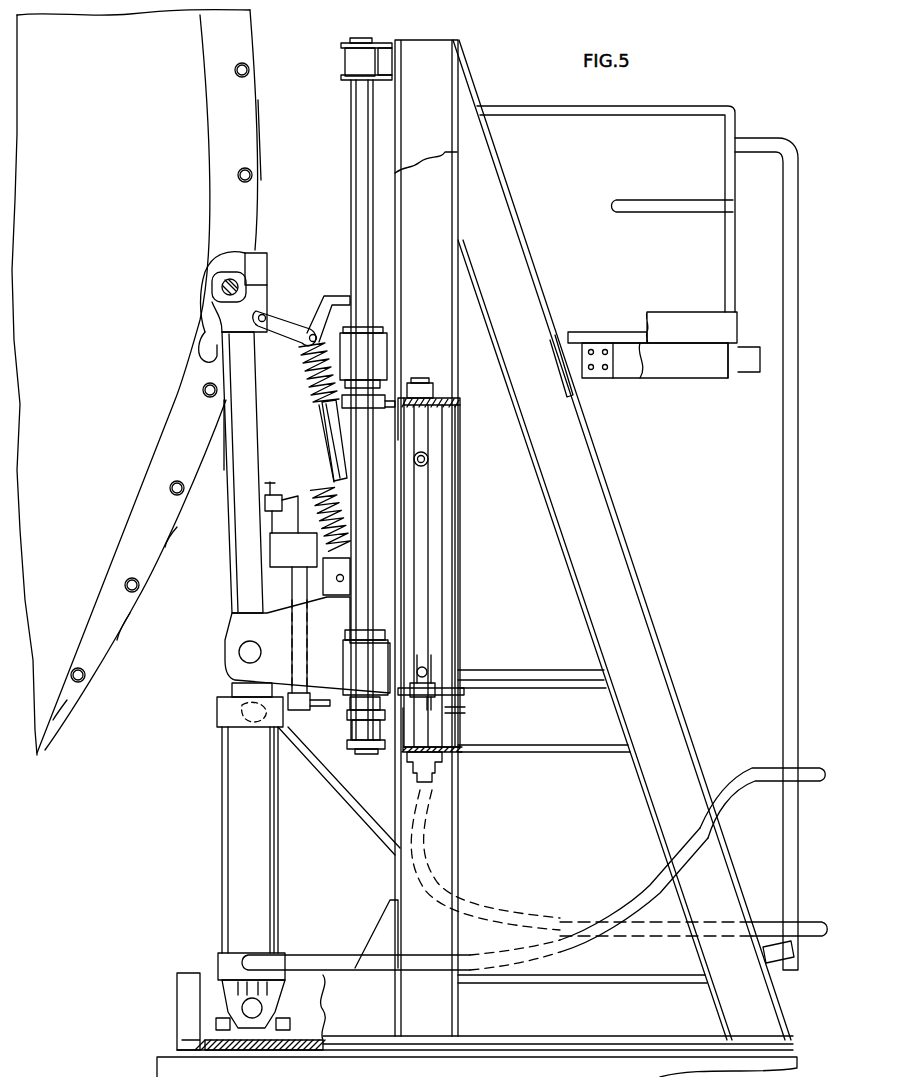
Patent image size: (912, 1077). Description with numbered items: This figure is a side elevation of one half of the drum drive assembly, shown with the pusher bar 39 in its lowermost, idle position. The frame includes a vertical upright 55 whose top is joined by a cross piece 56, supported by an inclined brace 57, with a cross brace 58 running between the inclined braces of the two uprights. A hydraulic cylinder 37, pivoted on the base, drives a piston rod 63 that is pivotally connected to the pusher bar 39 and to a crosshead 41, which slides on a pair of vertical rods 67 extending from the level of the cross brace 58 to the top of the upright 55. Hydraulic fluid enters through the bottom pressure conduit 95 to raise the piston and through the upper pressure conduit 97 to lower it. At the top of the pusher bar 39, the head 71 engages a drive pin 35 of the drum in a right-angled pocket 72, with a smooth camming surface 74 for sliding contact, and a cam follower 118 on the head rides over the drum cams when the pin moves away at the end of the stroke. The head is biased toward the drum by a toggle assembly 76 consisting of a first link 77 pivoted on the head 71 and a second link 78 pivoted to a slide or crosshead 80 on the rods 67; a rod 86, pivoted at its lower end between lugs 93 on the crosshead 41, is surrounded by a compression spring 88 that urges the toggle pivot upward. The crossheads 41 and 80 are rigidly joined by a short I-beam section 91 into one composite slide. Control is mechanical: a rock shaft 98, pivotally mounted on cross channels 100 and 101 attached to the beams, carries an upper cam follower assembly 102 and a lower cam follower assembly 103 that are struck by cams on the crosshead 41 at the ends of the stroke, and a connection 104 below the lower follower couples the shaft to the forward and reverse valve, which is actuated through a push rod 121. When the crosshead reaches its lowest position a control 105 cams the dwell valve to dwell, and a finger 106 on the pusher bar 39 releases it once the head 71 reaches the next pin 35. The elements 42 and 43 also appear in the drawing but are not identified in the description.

The drive pin 35 is at (241, 78).
The hydraulic cylinder 37 is at (258, 817).
The pusher bar 39 is at (232, 475).
The crosshead 41 is at (292, 638).
The mounting plate 42 is at (595, 332).
The hinged shelf 43 is at (705, 378).
The vertical upright 55 is at (445, 75).
The cross piece 56 is at (387, 50).
The inclined brace 57 is at (585, 450).
The cross brace 58 is at (566, 736).
The piston rod 63 is at (232, 689).
The vertical rods 67 is at (358, 133).
The head 71 is at (267, 262).
The right-angled pocket 72 is at (246, 280).
The camming or contact surface 74 is at (203, 312).
The toggle assembly 76 is at (283, 379).
The first link 77 is at (292, 322).
The second link 78 is at (335, 300).
The slide or crosshead 80 is at (367, 367).
The rod 86 is at (320, 438).
The compression spring 88 is at (305, 388).
The I-beam section 91 is at (340, 421).
The lugs 93 is at (327, 586).
The bottom pressure conduit 95 is at (320, 956).
The upper pressure conduit 97 is at (344, 795).
The rock shaft 98 is at (430, 520).
The cross channel 100 is at (432, 391).
The cross channel 101 is at (446, 753).
The upper cam follower assembly 102 is at (428, 456).
The lower cam follower assembly 103 is at (440, 660).
The connection 104 is at (428, 672).
The control 105 is at (293, 585).
The finger 106 is at (275, 520).
The cam follower 118 is at (200, 297).
The push rod 121 is at (445, 710).